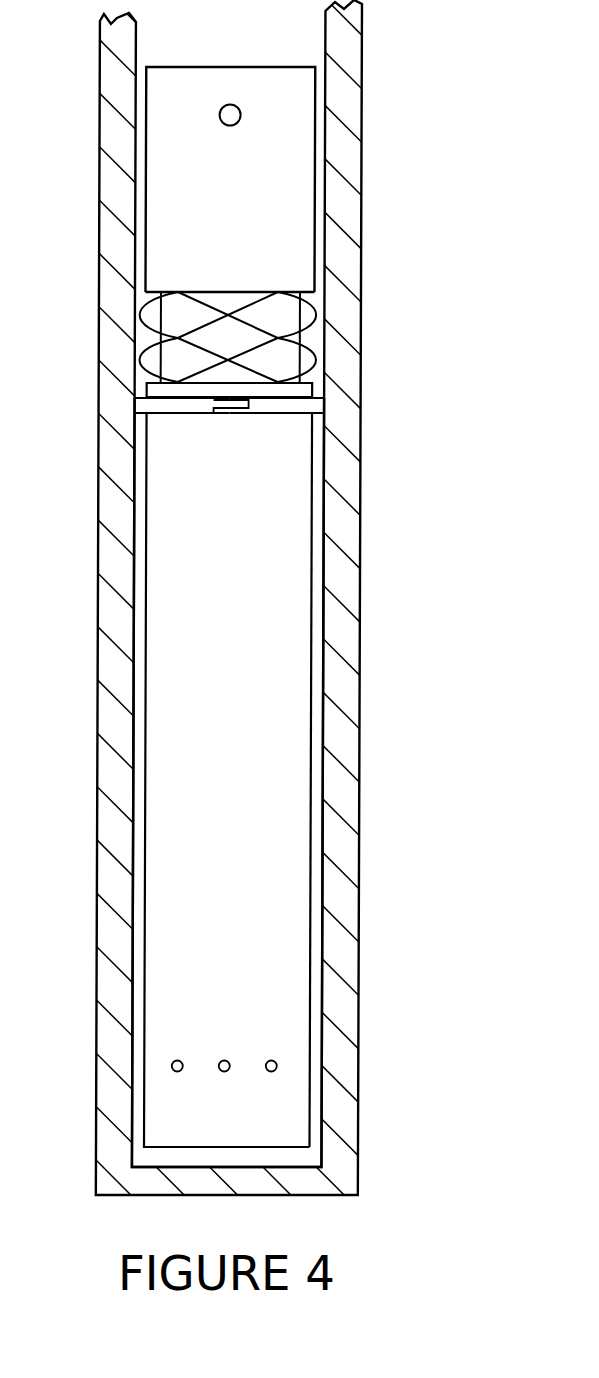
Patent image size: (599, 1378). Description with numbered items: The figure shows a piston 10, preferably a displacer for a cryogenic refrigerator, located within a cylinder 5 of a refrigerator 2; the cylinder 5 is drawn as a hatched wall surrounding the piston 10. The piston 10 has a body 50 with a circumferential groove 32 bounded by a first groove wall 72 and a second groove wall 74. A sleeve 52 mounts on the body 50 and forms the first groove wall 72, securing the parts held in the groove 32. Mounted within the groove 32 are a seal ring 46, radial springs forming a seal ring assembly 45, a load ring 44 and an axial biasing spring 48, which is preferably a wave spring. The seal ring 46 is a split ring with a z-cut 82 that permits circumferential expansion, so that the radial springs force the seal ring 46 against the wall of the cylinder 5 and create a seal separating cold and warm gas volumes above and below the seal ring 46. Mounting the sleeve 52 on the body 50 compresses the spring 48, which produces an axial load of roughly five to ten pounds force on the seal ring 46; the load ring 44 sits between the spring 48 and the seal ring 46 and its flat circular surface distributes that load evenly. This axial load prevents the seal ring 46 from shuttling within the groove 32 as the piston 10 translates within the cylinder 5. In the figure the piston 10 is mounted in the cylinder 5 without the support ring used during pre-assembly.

The refrigerator 2 is at (402, 968).
The cylinder 5 is at (345, 800).
The piston 10 is at (233, 45).
The sleeve 52 is at (316, 100).
The first groove wall 72 is at (148, 292).
The circumferential groove 32 is at (223, 332).
The spring 48 is at (150, 358).
The load ring 44 is at (315, 386).
The seal ring 46 is at (142, 405).
The seal ring assembly 45 is at (331, 407).
The z-cut 82 is at (236, 410).
The second groove wall 74 is at (292, 414).
The body 50 is at (324, 577).